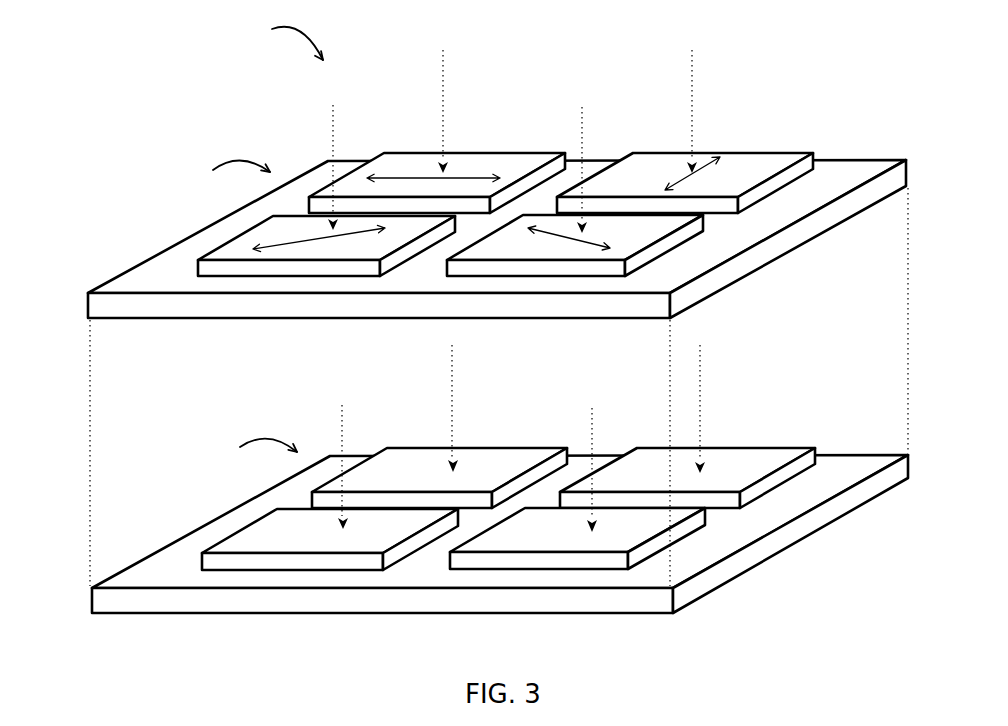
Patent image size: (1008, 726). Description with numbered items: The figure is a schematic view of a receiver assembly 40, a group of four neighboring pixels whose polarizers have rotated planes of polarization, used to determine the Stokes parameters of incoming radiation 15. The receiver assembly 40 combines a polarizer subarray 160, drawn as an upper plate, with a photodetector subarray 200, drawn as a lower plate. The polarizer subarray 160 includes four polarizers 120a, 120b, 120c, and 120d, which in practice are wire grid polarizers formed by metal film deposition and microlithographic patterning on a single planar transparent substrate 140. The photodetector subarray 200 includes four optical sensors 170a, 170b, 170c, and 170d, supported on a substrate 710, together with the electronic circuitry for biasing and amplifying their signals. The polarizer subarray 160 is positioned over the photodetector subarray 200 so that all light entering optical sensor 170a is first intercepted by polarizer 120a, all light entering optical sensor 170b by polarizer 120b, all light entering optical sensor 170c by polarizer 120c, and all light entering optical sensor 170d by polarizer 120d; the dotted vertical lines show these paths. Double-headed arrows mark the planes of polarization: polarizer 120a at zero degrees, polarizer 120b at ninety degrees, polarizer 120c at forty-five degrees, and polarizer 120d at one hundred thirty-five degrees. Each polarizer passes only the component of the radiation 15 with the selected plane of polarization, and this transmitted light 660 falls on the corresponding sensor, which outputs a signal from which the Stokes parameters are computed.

The receiver assembly 40 is at (276, 35).
The radiation 15 is at (425, 97).
The polarizer 120a is at (490, 157).
The polarizer 120b is at (748, 162).
The polarizer 120c is at (245, 247).
The polarizer 120d is at (640, 235).
The transparent substrate 140 is at (285, 307).
The polarizer subarray 160 is at (215, 177).
The transmitted light 660 is at (427, 401).
The optical sensor 170a is at (477, 467).
The optical sensor 170b is at (748, 455).
The optical sensor 170c is at (265, 530).
The optical sensor 170d is at (608, 528).
The photodetector subarray 200 is at (239, 450).
The substrate 710 is at (285, 602).